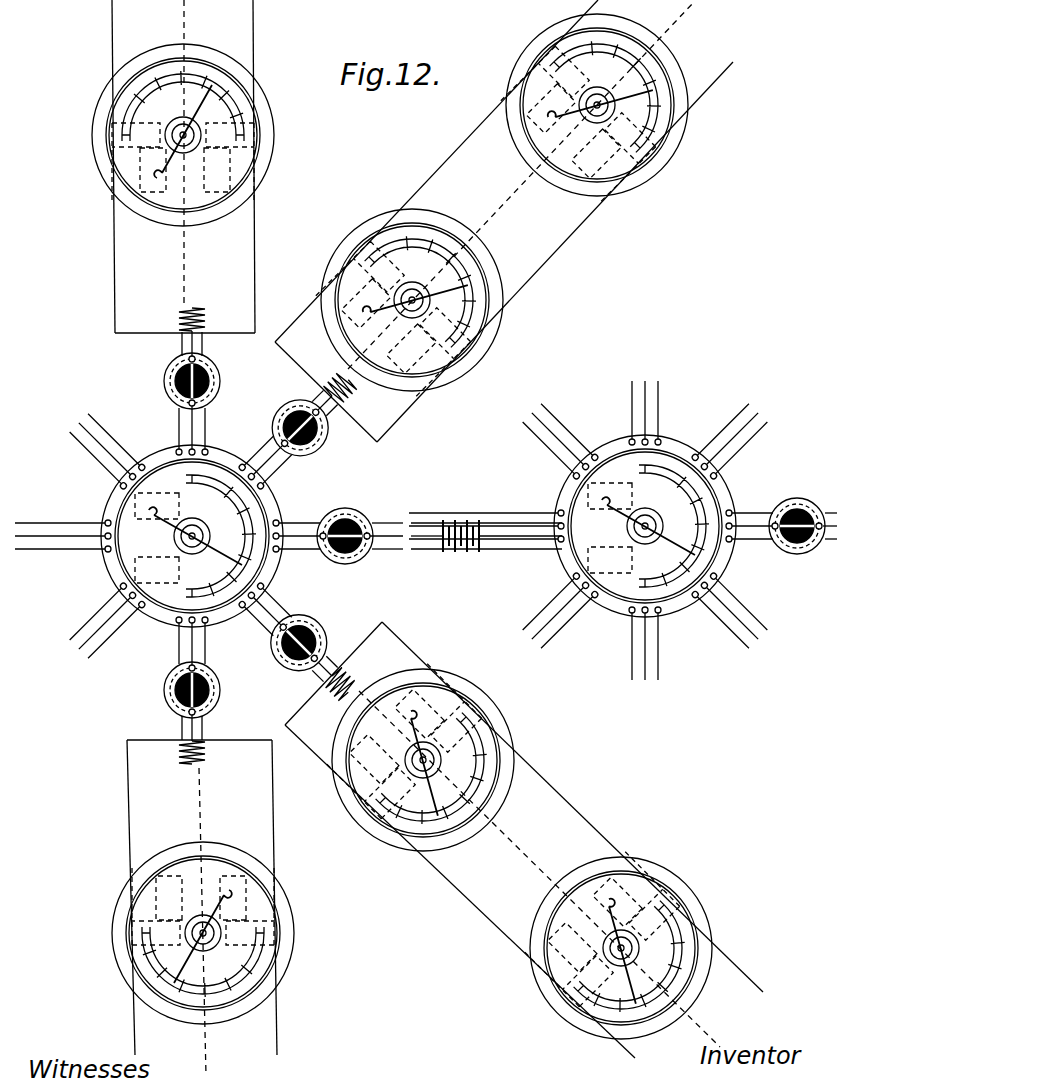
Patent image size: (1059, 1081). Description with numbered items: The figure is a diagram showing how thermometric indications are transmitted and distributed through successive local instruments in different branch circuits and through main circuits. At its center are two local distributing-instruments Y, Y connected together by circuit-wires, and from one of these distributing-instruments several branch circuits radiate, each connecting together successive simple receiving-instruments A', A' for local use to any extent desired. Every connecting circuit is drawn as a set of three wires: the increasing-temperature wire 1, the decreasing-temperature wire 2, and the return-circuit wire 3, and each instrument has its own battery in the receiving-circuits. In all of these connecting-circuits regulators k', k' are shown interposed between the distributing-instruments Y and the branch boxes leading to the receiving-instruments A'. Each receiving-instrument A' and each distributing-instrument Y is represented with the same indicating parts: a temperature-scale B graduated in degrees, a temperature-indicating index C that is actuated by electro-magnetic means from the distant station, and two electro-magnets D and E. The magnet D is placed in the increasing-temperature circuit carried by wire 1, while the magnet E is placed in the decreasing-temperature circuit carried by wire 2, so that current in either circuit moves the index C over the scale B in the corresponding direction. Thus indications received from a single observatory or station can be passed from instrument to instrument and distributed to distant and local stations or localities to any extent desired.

The increasing-temperature circuit-wire 1 is at (426, 527).
The decreasing-temperature circuit-wire 2 is at (426, 529).
The return-circuit wire 3 is at (426, 537).
The regulator k' is at (494, 534).
The local distributing-instrument Y is at (418, 522).
The simple receiving-instrument A' is at (414, 526).
The temperature-scale B is at (415, 527).
The temperature-indicating index C is at (422, 526).
The electro-magnet D is at (388, 505).
The electro-magnet E is at (383, 550).